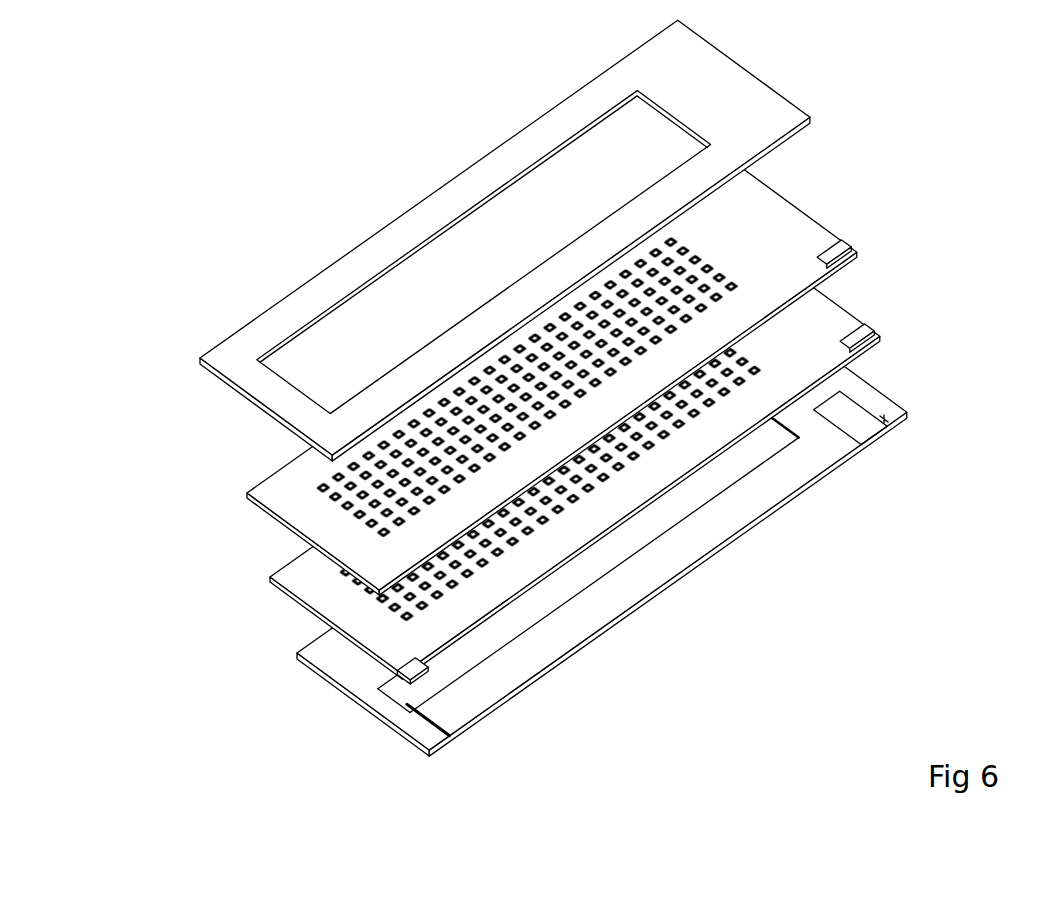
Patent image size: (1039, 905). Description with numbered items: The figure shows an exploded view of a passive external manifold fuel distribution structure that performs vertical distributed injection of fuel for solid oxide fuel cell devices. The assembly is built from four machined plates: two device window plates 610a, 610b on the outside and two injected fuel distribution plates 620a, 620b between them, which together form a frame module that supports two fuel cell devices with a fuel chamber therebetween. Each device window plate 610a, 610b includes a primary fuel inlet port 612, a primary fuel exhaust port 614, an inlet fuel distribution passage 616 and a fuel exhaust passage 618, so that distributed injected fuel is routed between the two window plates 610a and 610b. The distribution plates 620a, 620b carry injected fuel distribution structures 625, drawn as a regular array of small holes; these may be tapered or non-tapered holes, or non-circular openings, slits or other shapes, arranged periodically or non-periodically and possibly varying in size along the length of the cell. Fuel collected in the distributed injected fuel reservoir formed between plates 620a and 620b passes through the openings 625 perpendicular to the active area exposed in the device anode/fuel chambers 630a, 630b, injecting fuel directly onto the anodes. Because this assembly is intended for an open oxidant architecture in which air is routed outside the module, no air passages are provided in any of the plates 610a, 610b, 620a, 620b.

The device window plate 610a is at (741, 90).
The device window plate 610b is at (889, 398).
The injected fuel distribution plate 620a is at (793, 216).
The injected fuel distribution plate 620b is at (845, 322).
The injected fuel distribution structures 625 is at (400, 568).
The device anode/fuel chamber 630a is at (507, 210).
The device anode/fuel chamber 630b is at (660, 527).
The primary fuel inlet port 612 is at (886, 422).
The primary fuel exhaust port 614 is at (445, 738).
The inlet fuel distribution passage 616 is at (802, 412).
The fuel exhaust passage 618 is at (378, 686).